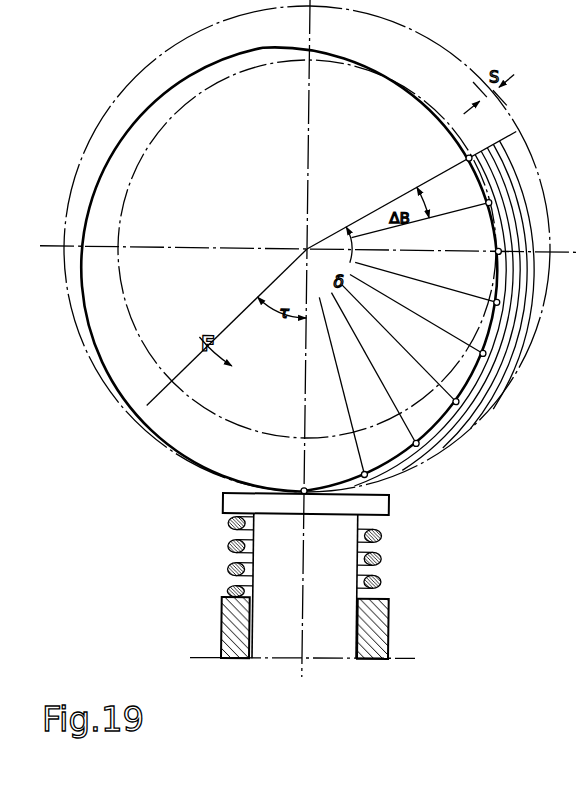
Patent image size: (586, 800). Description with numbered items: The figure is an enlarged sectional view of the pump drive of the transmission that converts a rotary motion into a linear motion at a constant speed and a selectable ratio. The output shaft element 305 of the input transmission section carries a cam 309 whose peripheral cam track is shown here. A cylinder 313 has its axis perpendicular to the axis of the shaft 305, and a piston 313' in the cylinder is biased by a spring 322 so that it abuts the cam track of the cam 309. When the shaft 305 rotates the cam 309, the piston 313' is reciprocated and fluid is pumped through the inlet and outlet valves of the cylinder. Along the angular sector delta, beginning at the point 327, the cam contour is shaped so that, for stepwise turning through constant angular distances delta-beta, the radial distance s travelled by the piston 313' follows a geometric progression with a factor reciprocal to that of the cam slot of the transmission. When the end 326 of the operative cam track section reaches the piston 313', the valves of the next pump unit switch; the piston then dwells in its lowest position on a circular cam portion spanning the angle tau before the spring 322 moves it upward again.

The output shaft element 305 is at (305, 247).
The cam 309 is at (200, 447).
The point 327 is at (465, 156).
The end of operative cam track section 326 is at (381, 509).
The piston 313' is at (355, 586).
The spring 322 is at (384, 578).
The cylinder 313 is at (322, 629).